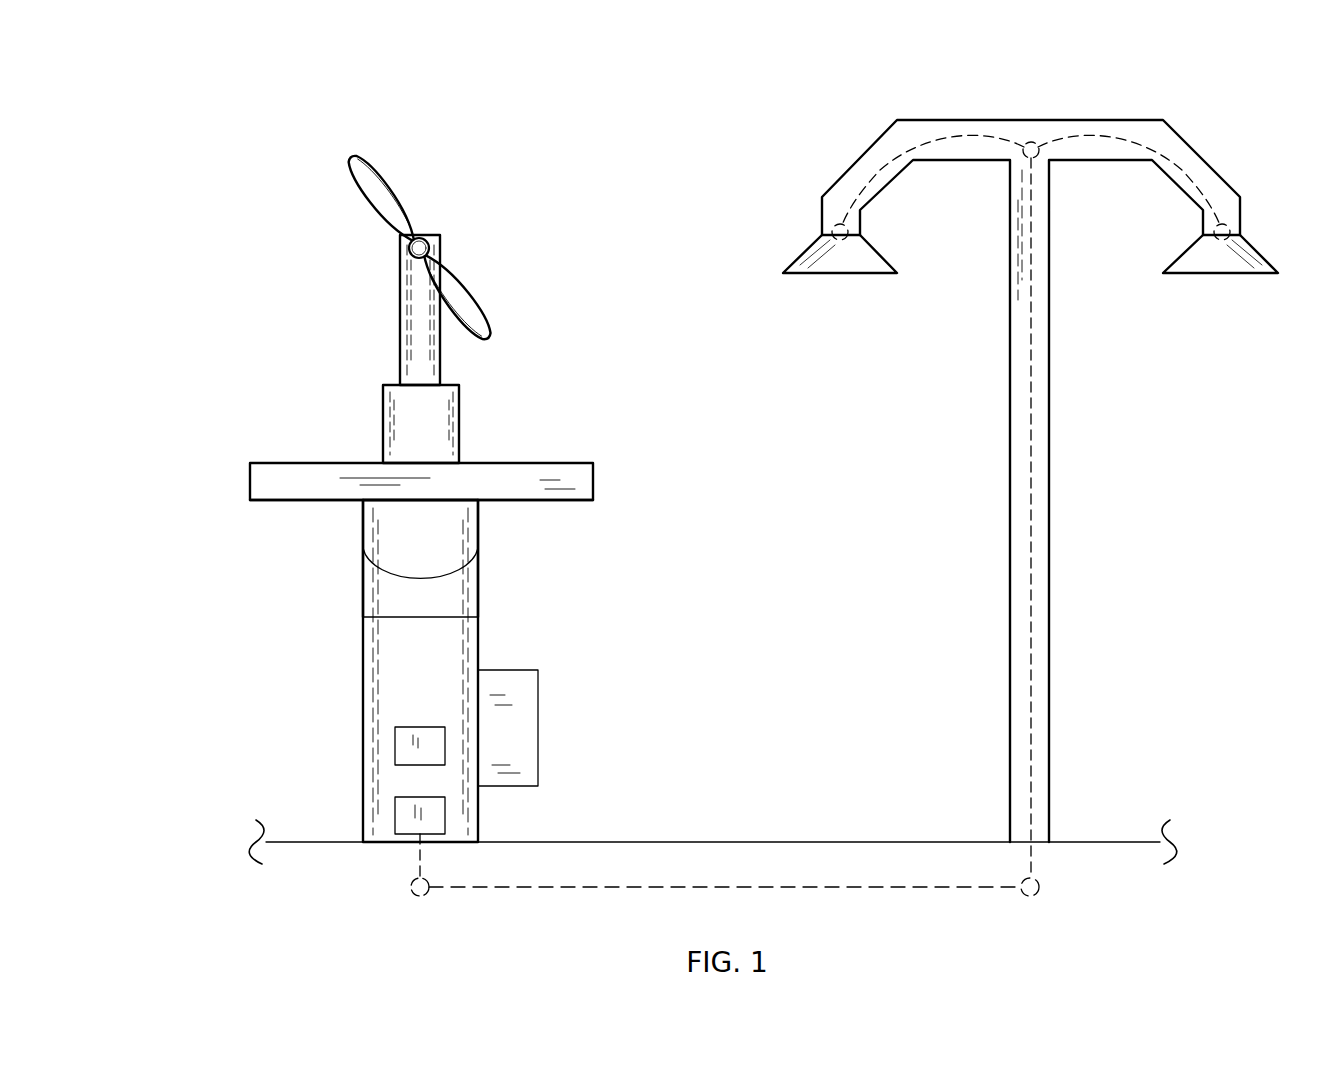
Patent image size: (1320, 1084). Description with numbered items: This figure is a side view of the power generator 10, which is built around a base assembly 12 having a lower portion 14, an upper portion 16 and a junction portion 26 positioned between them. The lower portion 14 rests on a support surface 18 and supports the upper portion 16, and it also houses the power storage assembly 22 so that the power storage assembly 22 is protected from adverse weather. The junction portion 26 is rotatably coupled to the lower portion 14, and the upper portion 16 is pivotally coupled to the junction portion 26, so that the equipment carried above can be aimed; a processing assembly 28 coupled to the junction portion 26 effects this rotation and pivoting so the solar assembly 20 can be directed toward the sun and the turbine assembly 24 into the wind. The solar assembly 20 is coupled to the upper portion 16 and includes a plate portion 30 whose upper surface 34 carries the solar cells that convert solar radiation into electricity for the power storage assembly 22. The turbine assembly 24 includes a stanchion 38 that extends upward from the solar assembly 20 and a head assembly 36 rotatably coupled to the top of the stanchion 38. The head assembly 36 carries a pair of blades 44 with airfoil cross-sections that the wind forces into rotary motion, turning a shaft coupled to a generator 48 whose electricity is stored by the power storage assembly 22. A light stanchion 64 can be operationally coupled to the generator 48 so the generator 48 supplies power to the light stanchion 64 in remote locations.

The power generator 10 is at (641, 202).
The base assembly 12 is at (326, 668).
The lower portion 14 is at (448, 703).
The upper portion 16 is at (440, 547).
The support surface 18 is at (640, 843).
The solar assembly 20 is at (513, 450).
The power storage assembly 22 is at (407, 813).
The turbine assembly 24 is at (480, 232).
The junction portion 26 is at (422, 582).
The processing assembly 28 is at (522, 725).
The plate portion 30 is at (538, 500).
The upper surface 34 is at (572, 462).
The head assembly 36 is at (417, 287).
The stanchion 38 is at (415, 337).
The blades 44 is at (377, 193).
The generator 48 is at (417, 752).
The light stanchion 64 is at (1037, 340).